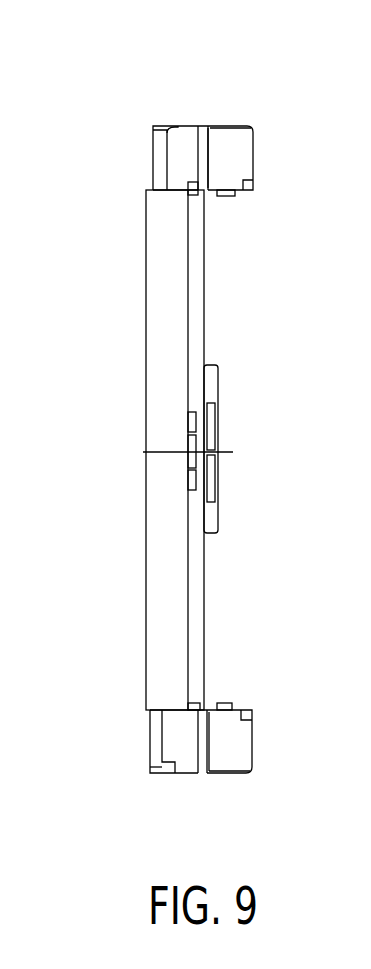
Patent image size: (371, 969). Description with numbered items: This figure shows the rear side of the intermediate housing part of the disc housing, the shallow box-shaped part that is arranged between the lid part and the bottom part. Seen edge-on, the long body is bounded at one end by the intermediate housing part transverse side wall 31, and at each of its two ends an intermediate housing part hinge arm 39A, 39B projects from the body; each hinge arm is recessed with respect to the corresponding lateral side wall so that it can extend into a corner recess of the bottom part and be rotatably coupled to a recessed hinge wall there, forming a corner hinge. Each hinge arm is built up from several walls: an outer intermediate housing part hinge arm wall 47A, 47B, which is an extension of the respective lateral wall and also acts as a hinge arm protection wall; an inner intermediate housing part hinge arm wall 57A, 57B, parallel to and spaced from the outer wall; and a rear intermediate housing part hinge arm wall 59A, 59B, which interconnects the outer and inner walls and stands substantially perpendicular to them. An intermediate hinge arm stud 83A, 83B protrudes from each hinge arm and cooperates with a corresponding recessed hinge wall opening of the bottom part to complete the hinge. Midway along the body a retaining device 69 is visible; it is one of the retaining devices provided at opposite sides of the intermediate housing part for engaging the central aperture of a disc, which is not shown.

The intermediate housing part transverse side wall 31 is at (172, 353).
The intermediate housing part hinge arm 39A is at (248, 126).
The intermediate housing part hinge arm 39B is at (244, 773).
The outer intermediate housing part hinge arm wall 47A is at (225, 126).
The outer intermediate housing part hinge arm wall 47B is at (222, 773).
The inner intermediate housing part hinge arm wall 57A is at (242, 190).
The inner intermediate housing part hinge arm wall 57B is at (240, 708).
The rear intermediate housing part hinge arm wall 59A is at (240, 153).
The rear intermediate housing part hinge arm wall 59B is at (235, 748).
The retaining device 69 is at (193, 478).
The intermediate hinge arm stud 83A is at (230, 196).
The intermediate hinge arm stud 83B is at (222, 703).